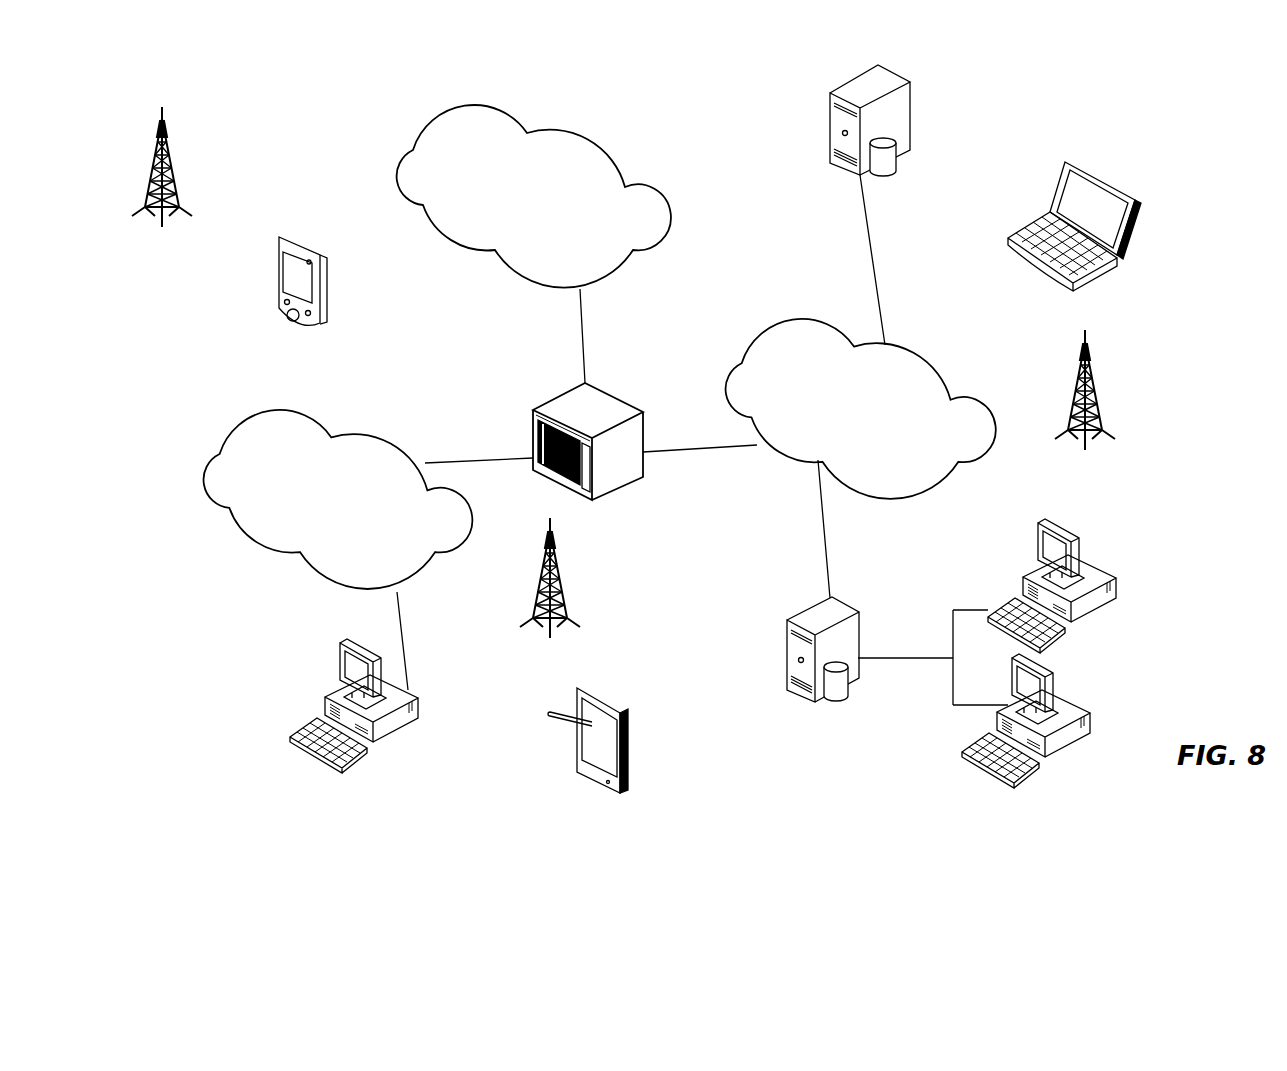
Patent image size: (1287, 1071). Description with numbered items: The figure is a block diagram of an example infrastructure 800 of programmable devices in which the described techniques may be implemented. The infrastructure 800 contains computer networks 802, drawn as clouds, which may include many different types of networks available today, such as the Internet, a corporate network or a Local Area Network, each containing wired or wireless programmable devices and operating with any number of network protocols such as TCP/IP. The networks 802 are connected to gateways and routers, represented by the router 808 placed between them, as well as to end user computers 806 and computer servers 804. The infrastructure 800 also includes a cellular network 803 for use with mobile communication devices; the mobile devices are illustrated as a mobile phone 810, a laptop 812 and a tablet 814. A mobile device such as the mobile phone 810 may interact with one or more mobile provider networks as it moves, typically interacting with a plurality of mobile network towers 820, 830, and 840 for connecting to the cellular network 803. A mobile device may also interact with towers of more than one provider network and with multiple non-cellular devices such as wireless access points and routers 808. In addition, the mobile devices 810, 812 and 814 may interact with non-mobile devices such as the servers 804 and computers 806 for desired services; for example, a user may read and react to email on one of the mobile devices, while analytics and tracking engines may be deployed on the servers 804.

The infrastructure 800 is at (989, 155).
The computer networks 802 is at (945, 378).
The cellular network 803 is at (575, 135).
The computer servers 804 is at (830, 112).
The end user computers 806 is at (418, 702).
The gateways and routers 808 is at (608, 395).
The mobile phones 810 is at (307, 243).
The laptops 812 is at (1112, 183).
The tablets 814 is at (613, 697).
The mobile network tower 820 is at (550, 593).
The mobile network tower 830 is at (1085, 404).
The mobile network tower 840 is at (162, 180).